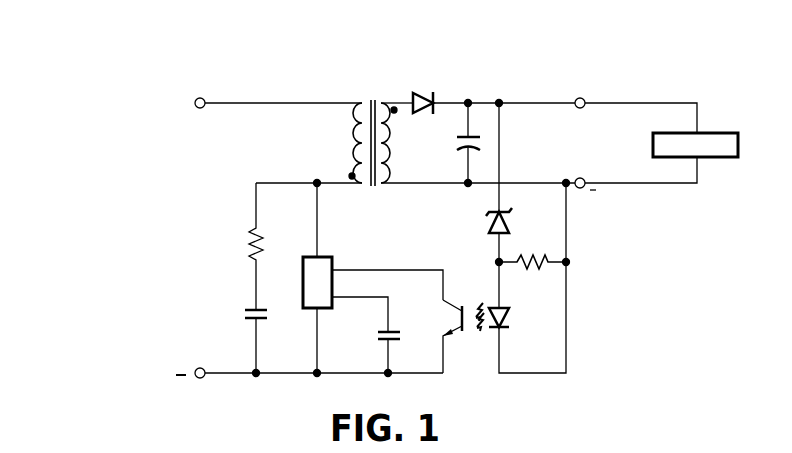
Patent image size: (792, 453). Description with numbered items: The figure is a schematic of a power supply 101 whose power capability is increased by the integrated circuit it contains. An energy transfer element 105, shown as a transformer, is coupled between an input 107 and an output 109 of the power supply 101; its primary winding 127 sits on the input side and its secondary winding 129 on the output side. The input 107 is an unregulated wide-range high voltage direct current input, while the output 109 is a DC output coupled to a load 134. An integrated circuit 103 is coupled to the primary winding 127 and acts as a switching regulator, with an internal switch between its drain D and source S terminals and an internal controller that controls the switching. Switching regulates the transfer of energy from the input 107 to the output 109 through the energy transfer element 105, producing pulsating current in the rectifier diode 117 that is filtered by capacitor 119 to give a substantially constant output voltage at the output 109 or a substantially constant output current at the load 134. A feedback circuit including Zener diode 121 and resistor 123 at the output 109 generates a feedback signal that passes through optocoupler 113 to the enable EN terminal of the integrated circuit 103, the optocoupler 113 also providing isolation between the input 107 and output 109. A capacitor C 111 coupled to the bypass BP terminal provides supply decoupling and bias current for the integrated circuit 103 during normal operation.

The power supply 101 is at (726, 49).
The integrated circuit 103 is at (303, 285).
The energy transfer element 105 is at (370, 100).
The input 107 is at (153, 212).
The output 109 is at (580, 95).
The capacitor C 111 is at (404, 323).
The optocoupler 113 is at (472, 343).
The rectifier diode 117 is at (430, 92).
The capacitor 119 is at (457, 143).
The Zener diode 121 is at (485, 222).
The resistor 123 is at (527, 252).
The primary winding 127 is at (362, 188).
The secondary winding 129 is at (384, 188).
The load 134 is at (715, 132).